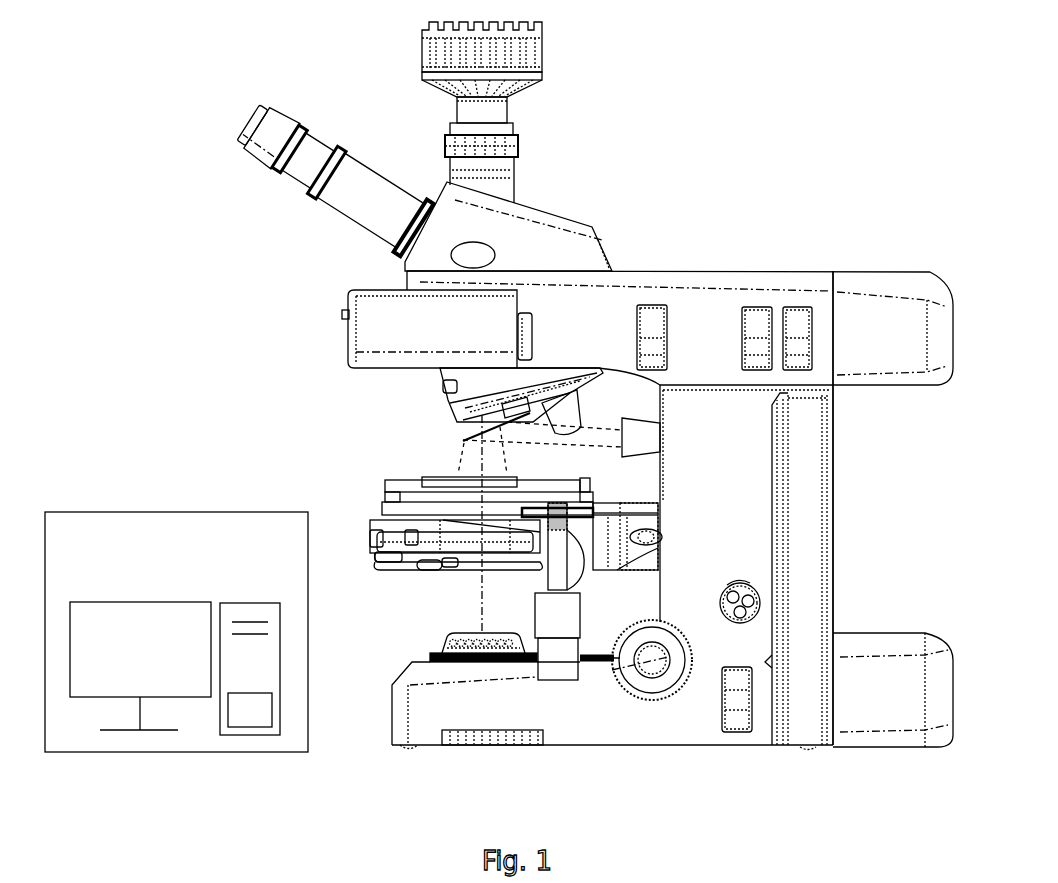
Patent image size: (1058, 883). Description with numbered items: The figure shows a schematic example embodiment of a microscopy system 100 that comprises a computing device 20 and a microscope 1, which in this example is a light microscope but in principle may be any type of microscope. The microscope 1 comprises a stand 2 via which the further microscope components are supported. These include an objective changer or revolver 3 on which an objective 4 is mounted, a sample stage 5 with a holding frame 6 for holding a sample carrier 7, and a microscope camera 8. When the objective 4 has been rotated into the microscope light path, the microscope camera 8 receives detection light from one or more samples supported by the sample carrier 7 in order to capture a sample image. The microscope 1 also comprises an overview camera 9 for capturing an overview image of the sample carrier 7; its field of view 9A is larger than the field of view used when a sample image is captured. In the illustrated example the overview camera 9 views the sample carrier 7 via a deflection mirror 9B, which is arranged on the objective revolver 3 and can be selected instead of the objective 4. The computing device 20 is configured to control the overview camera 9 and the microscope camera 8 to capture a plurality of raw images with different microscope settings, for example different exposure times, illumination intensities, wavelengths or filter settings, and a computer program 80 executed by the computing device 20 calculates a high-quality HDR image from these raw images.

The microscopy system 100 is at (824, 113).
The microscope 1 is at (810, 252).
The stand 2 is at (817, 497).
The objective changer/revolver 3 is at (443, 388).
The objective 4 is at (578, 401).
The sample stage 5 is at (390, 505).
The holding frame 6 is at (387, 486).
The sample carrier 7 is at (398, 479).
The microscope camera 8 is at (530, 50).
The overview camera 9 is at (561, 437).
The field of view 9A is at (460, 460).
The deflection mirror 9B is at (462, 432).
The computing device 20 is at (176, 632).
The computer program 80 is at (250, 710).